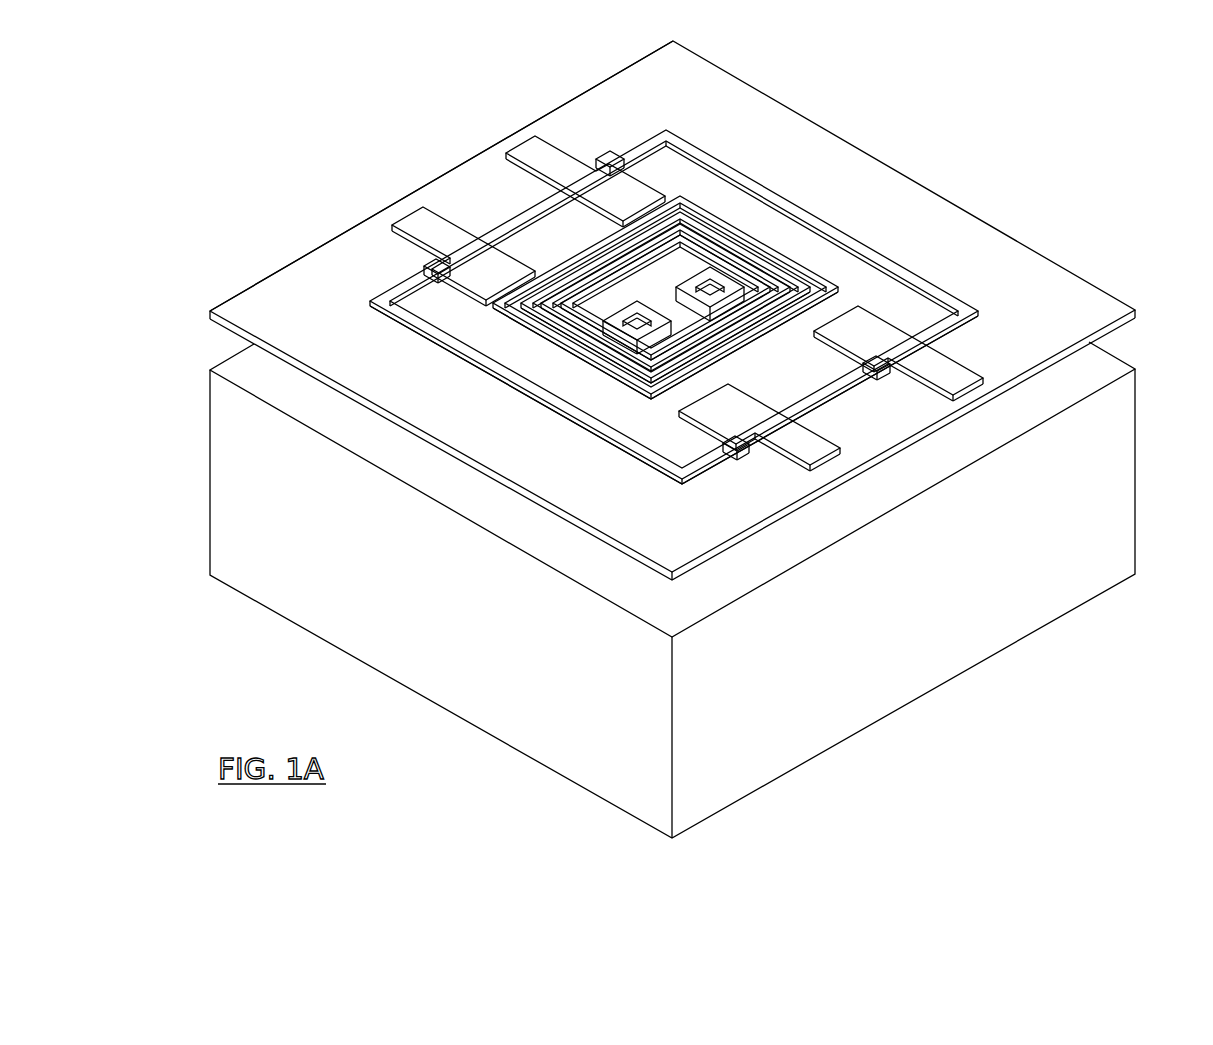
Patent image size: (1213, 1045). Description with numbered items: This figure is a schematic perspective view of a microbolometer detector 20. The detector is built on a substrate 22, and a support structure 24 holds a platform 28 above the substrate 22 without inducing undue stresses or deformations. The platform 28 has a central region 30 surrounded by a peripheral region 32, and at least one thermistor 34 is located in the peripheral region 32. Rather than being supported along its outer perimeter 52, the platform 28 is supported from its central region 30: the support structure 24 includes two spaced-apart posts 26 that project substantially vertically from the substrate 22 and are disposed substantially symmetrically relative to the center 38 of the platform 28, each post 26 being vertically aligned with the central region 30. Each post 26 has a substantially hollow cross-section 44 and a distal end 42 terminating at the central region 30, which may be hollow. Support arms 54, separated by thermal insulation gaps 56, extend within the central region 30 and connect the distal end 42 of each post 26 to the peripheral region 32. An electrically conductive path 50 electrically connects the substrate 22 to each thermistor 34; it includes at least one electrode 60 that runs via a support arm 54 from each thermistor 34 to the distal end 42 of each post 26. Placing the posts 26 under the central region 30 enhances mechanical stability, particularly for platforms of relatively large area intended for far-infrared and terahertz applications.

The microbolometer detector 20 is at (1055, 80).
The substrate 22 is at (822, 619).
The support structure 24 is at (694, 319).
The post 26 is at (653, 317).
The platform 28 is at (1045, 323).
The central region 30 is at (757, 266).
The peripheral region 32 is at (591, 98).
The thermistor 34 is at (450, 194).
The center 38 is at (680, 318).
The distal end 42 is at (620, 336).
The hollow cross-section 44 is at (634, 326).
The electrically conductive path 50 is at (455, 363).
The outer perimeter 52 is at (253, 280).
The support arm 54 is at (558, 340).
The thermal insulation gap 56 is at (568, 348).
The electrode 60 is at (713, 158).